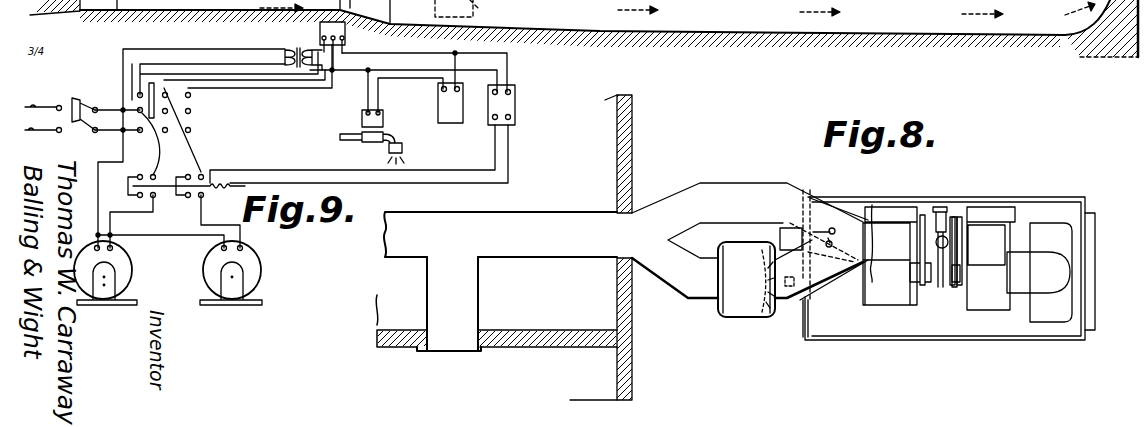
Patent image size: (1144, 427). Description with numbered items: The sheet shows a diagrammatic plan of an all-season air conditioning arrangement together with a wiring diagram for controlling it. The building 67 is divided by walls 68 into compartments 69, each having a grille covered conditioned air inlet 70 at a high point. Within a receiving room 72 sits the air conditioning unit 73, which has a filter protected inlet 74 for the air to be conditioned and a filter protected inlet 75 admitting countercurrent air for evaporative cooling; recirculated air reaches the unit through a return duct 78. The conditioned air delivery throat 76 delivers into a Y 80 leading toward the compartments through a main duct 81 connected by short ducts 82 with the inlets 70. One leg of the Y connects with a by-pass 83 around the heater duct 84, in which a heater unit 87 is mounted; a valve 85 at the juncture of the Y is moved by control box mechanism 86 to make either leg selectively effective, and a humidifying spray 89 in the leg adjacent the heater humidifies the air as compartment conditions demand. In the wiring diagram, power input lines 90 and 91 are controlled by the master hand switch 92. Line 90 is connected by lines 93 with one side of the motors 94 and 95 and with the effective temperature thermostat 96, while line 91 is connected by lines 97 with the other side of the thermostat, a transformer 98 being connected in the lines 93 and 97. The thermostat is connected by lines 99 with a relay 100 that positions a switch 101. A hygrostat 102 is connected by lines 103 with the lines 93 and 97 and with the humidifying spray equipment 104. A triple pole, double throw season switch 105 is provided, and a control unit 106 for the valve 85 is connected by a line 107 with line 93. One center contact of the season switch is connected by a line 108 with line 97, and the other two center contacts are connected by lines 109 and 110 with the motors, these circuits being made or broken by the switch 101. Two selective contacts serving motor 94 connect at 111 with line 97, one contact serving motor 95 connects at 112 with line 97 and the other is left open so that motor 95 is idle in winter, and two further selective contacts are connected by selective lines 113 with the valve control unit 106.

In FIG. 8, the building 67 is at (658, 352).
In FIG. 8, the walls 68 is at (632, 132).
In FIG. 8, the compartments 69 is at (496, 343).
In FIG. 8, the conditioned air inlet 70 is at (468, 358).
In FIG. 8, the receiving room 72 is at (763, 203).
In FIG. 8, the air conditioning unit 73 is at (1050, 196).
In FIG. 8, the filter protected inlet 74 is at (1092, 216).
In FIG. 8, the filter protected inlet 75 is at (805, 318).
In FIG. 8, the conditioned air delivery throat 76 is at (888, 272).
In FIG. 8, the return duct 78 is at (584, 28).
In FIG. 8, the Y 80 is at (812, 198).
In FIG. 8, the main duct 81 is at (500, 234).
In FIG. 8, the short ducts 82 is at (463, 292).
In FIG. 8, the by-pass 83 is at (681, 195).
In FIG. 8, the heater duct 84 is at (678, 292).
In FIG. 8, the valve 85 is at (858, 198).
In FIG. 8, the control box mechanism 86 is at (791, 226).
In FIG. 8, the heater unit 87 is at (746, 243).
In FIG. 8, the humidifying spray 89 is at (787, 290).
In FIG. 9, the power input line 90 is at (32, 143).
In FIG. 9, the power input line 91 is at (35, 95).
In FIG. 9, the master hand switch 92 is at (80, 100).
In FIG. 9, the lines 93 is at (182, 64).
In FIG. 9, the motor 94 is at (132, 275).
In FIG. 9, the motor 95 is at (261, 272).
In FIG. 9, the effective temperature thermostat 96 is at (515, 100).
In FIG. 9, the lines 97 is at (248, 55).
In FIG. 9, the transformer 98 is at (300, 50).
In FIG. 9, the lines 99 is at (478, 178).
In FIG. 9, the relay 100 is at (210, 189).
In FIG. 9, the switch 101 is at (158, 200).
In FIG. 9, the hygrostat 102 is at (452, 118).
In FIG. 9, the lines 103 is at (405, 70).
In FIG. 9, the humidifying spray equipment 104 is at (372, 142).
In FIG. 9, the season switch 105 is at (148, 58).
In FIG. 9, the control unit 106 is at (345, 30).
In FIG. 9, the line 107 is at (343, 53).
In FIG. 9, the line 108 is at (311, 100).
In FIG. 9, the line 109 is at (172, 160).
In FIG. 9, the line 110 is at (185, 143).
In FIG. 9, the connection 111 is at (191, 121).
In FIG. 9, the connection 112 is at (146, 121).
In FIG. 9, the selective lines 113 is at (276, 84).